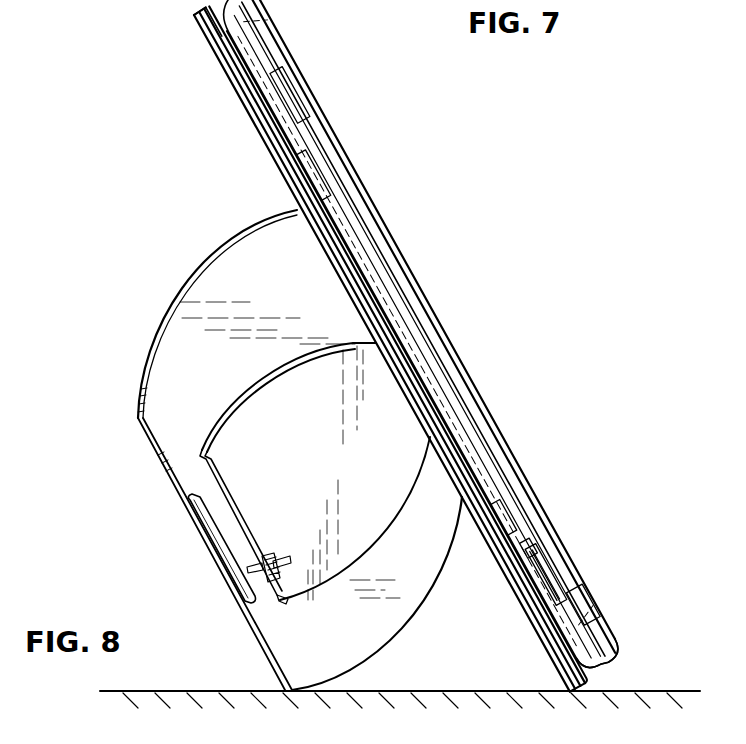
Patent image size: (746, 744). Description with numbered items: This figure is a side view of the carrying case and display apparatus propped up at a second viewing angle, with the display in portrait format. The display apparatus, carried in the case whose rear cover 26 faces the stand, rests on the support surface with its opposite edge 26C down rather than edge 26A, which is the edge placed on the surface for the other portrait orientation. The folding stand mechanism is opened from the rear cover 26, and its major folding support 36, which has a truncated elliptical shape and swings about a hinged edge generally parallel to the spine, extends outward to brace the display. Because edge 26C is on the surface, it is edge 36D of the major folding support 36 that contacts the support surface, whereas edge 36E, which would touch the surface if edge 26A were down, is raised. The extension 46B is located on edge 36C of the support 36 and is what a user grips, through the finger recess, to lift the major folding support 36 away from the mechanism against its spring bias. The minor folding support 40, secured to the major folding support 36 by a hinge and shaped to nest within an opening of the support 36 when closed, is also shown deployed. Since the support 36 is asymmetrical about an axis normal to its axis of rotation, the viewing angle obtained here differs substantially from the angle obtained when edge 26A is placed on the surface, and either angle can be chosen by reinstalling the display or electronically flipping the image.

The rear cover 26 is at (250, 117).
The edge 26A is at (197, 14).
The opposite edge 26C is at (588, 686).
The major folding support 36 is at (279, 450).
The edge 36E is at (217, 260).
The edge 36C is at (158, 460).
The edge 36D is at (383, 652).
The minor folding support 40 is at (307, 459).
The extension 46B is at (200, 540).